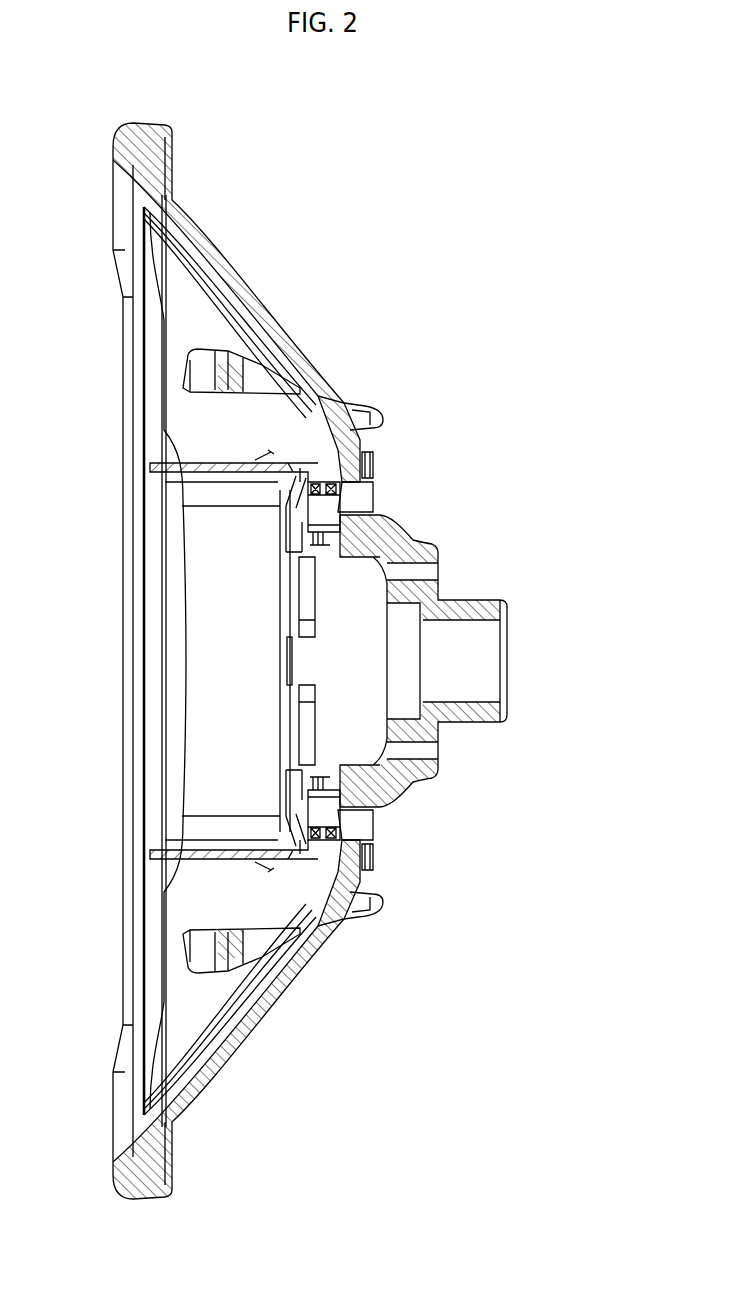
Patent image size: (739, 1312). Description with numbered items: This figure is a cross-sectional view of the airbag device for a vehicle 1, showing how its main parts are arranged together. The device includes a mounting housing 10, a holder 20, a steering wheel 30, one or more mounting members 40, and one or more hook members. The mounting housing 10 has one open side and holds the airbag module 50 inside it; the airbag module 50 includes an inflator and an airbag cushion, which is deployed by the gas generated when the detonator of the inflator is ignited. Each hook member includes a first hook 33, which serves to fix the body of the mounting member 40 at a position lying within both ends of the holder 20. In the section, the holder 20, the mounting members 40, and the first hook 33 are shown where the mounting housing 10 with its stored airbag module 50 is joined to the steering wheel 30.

The speaker 1 is at (603, 121).
The mounting housing 10 is at (177, 462).
The holder 20 is at (333, 816).
The steering wheel 30 is at (298, 380).
The first hook 33 is at (290, 460).
The mounting member 40 is at (340, 515).
The airbag module 50 is at (207, 848).